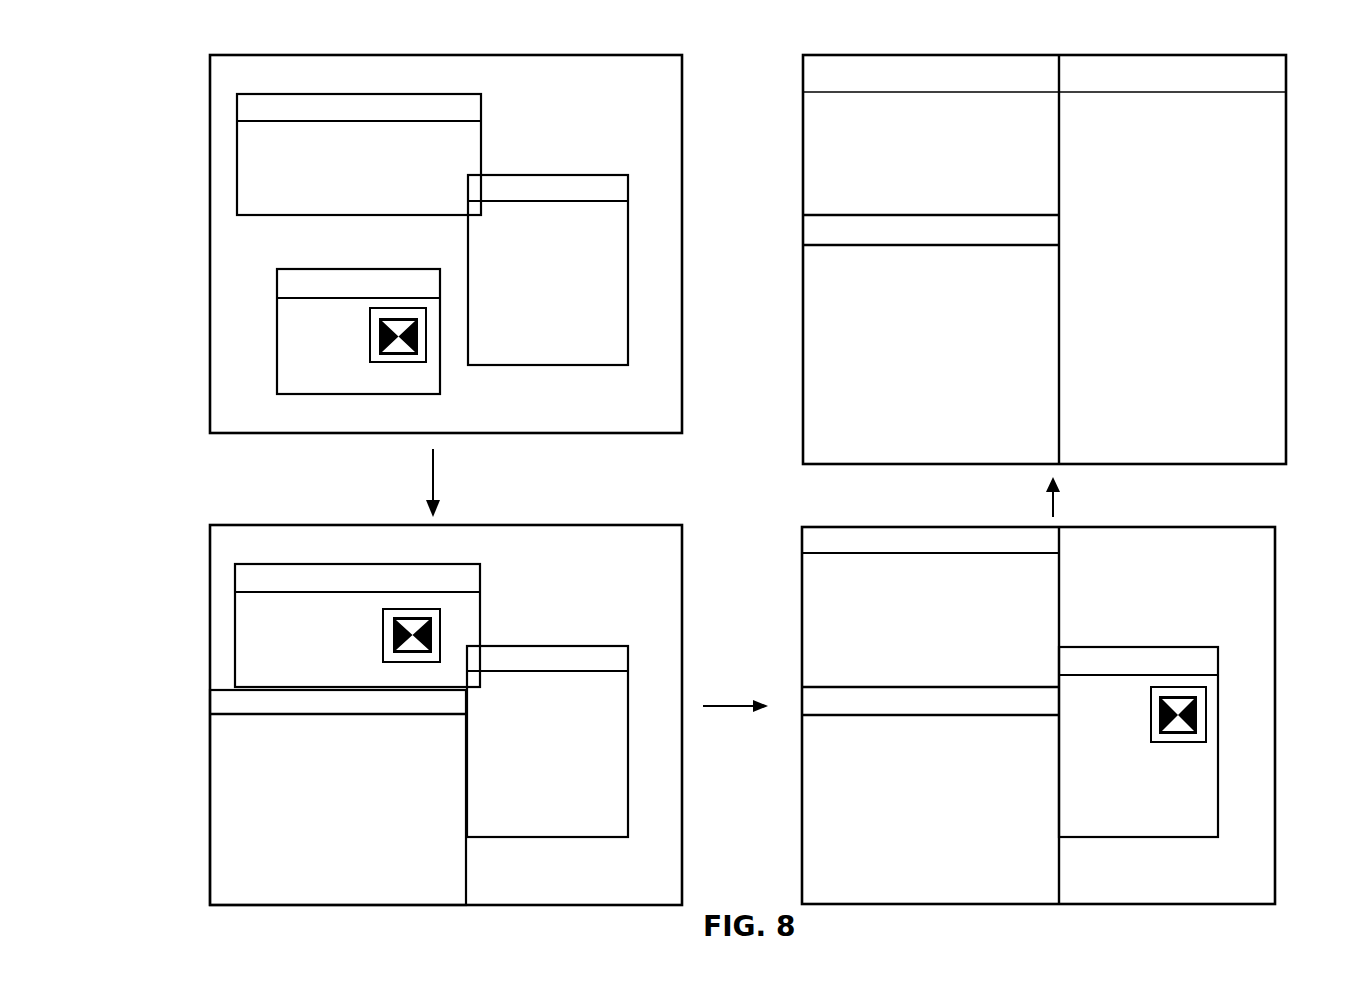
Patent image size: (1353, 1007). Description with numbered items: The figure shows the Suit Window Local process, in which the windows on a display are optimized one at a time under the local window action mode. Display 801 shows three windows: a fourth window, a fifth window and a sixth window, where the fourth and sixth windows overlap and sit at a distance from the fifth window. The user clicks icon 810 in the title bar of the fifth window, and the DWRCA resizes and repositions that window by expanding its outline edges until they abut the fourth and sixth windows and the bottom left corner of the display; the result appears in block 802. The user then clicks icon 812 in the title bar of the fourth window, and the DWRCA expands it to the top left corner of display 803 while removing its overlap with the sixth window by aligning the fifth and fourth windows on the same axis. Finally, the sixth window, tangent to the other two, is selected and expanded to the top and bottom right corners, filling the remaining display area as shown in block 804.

The display 801 is at (477, 232).
The block 802 is at (477, 702).
The display 803 is at (1069, 701).
The block 804 is at (1071, 252).
The icon 810 is at (372, 363).
The icon 812 is at (392, 648).